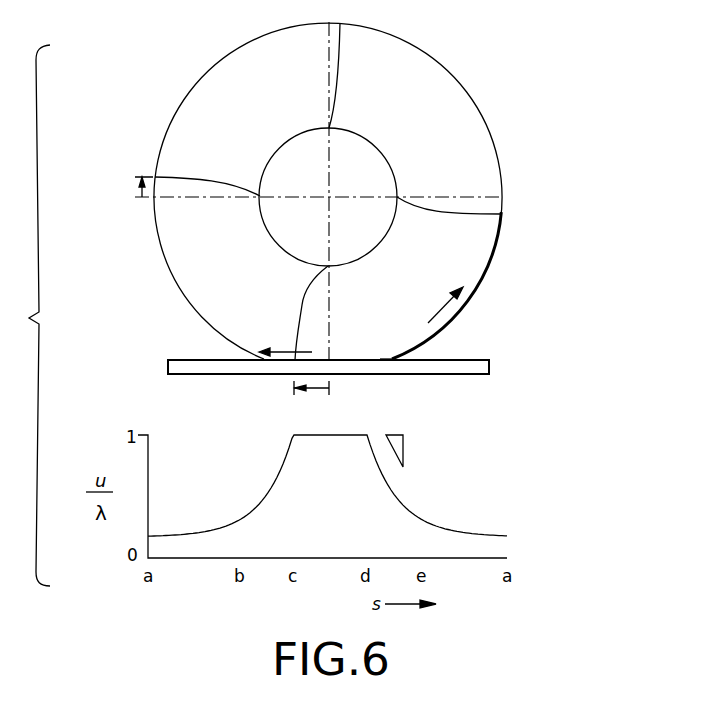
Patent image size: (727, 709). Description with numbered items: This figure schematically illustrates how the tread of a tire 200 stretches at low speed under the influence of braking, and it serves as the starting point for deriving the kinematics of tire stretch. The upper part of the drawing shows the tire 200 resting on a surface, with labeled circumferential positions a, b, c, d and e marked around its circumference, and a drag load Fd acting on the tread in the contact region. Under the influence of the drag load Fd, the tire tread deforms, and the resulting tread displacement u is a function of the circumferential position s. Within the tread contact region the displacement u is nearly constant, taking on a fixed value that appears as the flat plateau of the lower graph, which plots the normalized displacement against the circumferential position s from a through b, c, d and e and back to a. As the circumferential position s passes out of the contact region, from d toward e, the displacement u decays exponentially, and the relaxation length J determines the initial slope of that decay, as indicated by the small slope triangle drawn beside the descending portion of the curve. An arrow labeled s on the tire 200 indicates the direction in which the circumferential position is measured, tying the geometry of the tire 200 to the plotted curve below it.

The tire 200 is at (372, 216).
The point a on wheel circumference a is at (326, 75).
The point b on wheel circumference b is at (207, 203).
The point c, leading edge of contact patch c is at (265, 360).
The position d is at (381, 348).
The position e is at (449, 191).
The circumferential position s is at (445, 305).
The tread displacement u is at (137, 186).
The drag load Fd is at (285, 336).
The relaxation length J is at (442, 441).